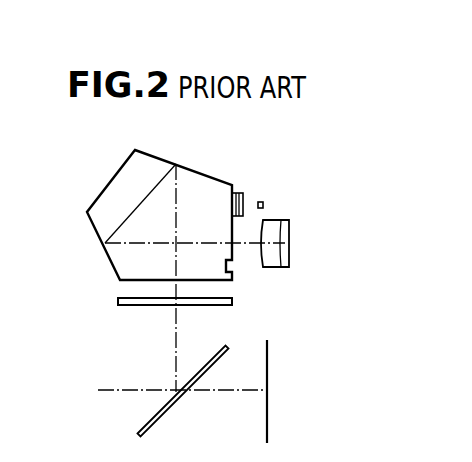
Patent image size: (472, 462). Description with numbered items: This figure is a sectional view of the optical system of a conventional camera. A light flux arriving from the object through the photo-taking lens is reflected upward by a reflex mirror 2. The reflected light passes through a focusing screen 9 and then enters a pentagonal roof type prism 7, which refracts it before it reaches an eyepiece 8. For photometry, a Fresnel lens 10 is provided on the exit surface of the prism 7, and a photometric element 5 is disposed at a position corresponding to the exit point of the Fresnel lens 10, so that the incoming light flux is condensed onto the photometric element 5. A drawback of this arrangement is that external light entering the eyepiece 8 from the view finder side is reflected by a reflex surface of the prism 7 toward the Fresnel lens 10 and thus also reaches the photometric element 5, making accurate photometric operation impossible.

The pentagonal roof type prism 7 is at (153, 156).
The Fresnel lens 10 is at (243, 194).
The photometric element 5 is at (264, 202).
The eyepiece 8 is at (290, 230).
The focusing screen 9 is at (140, 306).
The reflex mirror 2 is at (164, 413).